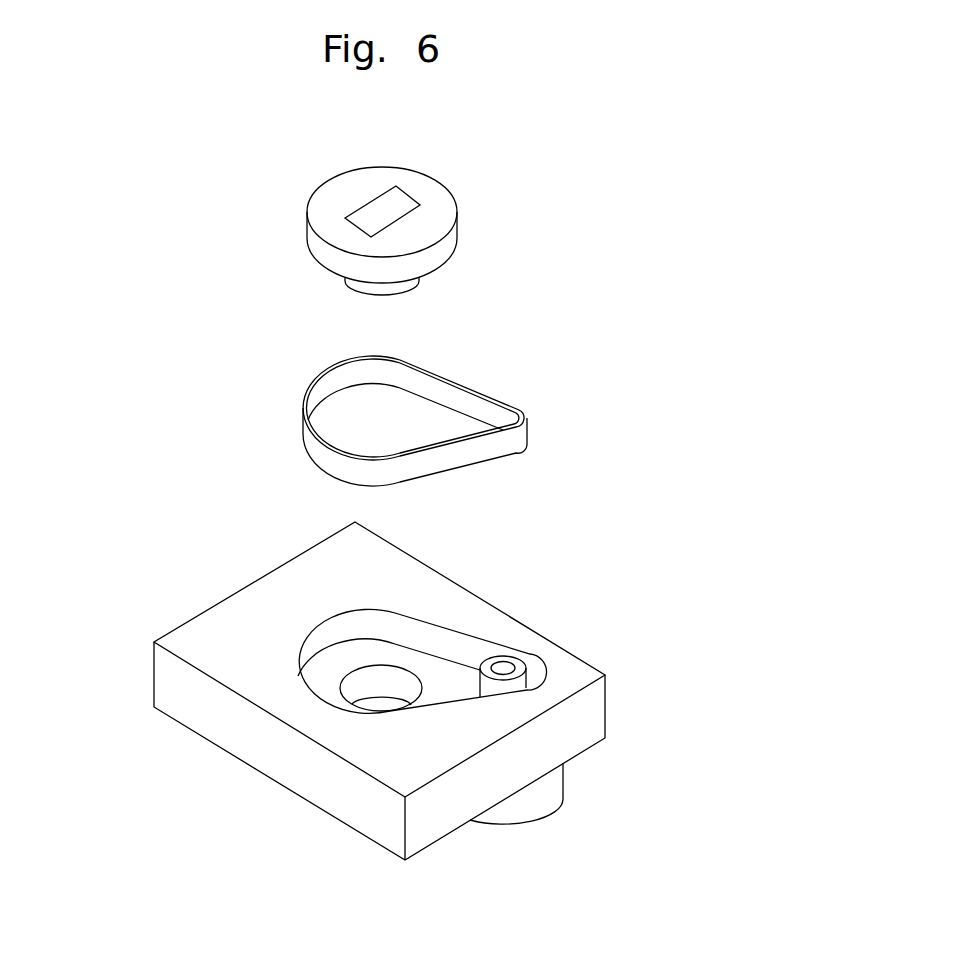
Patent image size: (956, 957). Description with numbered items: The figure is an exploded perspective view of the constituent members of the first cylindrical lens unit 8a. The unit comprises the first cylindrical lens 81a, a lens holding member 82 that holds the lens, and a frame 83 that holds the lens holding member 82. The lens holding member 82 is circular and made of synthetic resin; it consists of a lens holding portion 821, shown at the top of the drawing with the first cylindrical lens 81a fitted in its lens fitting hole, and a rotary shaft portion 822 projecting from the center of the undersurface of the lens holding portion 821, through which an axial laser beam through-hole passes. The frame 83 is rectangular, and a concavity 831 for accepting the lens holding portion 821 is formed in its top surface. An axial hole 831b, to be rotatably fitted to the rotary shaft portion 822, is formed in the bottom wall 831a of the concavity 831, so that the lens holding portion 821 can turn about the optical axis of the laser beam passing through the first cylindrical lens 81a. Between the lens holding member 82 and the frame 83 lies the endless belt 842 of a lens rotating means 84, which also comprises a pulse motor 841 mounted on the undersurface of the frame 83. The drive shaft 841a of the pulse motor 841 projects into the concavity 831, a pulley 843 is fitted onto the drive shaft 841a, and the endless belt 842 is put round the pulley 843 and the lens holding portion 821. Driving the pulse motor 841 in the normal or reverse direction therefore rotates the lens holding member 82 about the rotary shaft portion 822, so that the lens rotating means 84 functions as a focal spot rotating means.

The first cylindrical lens unit 8a is at (550, 256).
The first cylindrical lens 81a is at (363, 213).
The lens holding member 82 is at (306, 232).
The lens holding portion 821 is at (450, 248).
The rotary shaft portion 822 is at (397, 290).
The endless belt 842 is at (472, 385).
The frame 83 is at (530, 624).
The concavity 831 is at (433, 638).
The bottom wall 831a is at (335, 662).
The axial hole 831b is at (388, 673).
The drive shaft 841a is at (510, 667).
The pulley 843 is at (527, 658).
The lens rotating means 84 is at (566, 779).
The pulse motor 841 is at (547, 802).